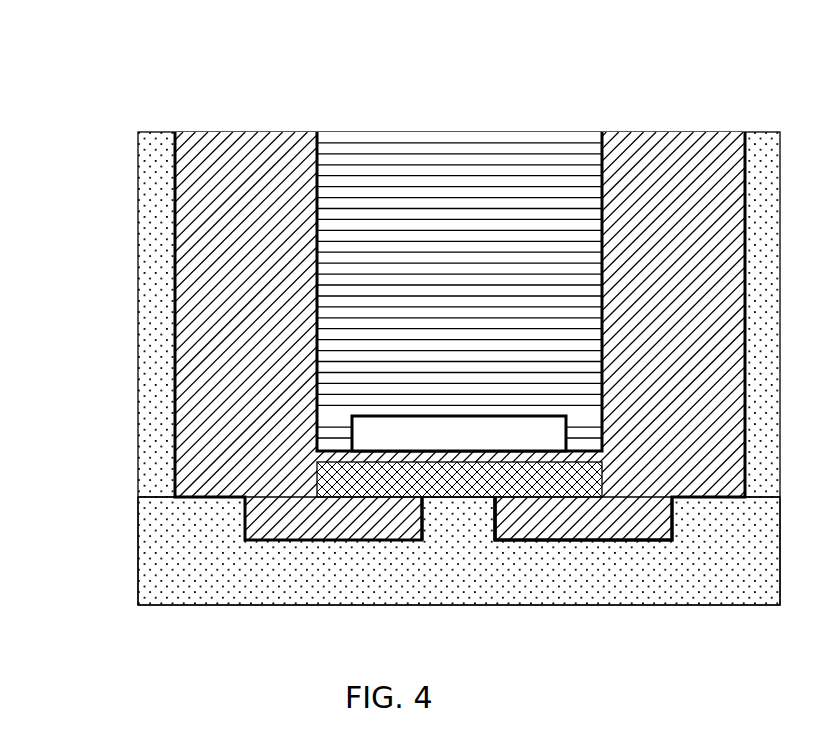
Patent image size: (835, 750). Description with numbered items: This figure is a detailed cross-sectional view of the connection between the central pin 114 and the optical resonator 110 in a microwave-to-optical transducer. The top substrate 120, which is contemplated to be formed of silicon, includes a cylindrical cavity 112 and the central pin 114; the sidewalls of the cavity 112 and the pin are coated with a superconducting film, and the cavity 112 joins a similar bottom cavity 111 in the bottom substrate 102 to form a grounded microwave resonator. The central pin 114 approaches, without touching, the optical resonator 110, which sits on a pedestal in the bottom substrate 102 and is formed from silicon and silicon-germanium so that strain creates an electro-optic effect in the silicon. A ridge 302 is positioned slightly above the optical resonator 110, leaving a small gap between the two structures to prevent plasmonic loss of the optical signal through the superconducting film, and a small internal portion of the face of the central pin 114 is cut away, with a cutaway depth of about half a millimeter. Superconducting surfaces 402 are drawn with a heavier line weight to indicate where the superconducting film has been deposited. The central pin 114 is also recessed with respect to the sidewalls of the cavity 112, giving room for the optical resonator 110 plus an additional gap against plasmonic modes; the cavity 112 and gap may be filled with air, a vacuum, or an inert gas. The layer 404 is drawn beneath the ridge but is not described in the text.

The bottom substrate 102 is at (138, 538).
The optical resonator 110 is at (455, 497).
The bottom cavity 111 is at (585, 543).
The cylindrical cavity 112 is at (248, 132).
The central pin 114 is at (463, 132).
The top substrate 120 is at (138, 292).
The ridge 302 is at (565, 432).
The superconducting surfaces 402 is at (745, 132).
The barrier layer 404 is at (138, 470).